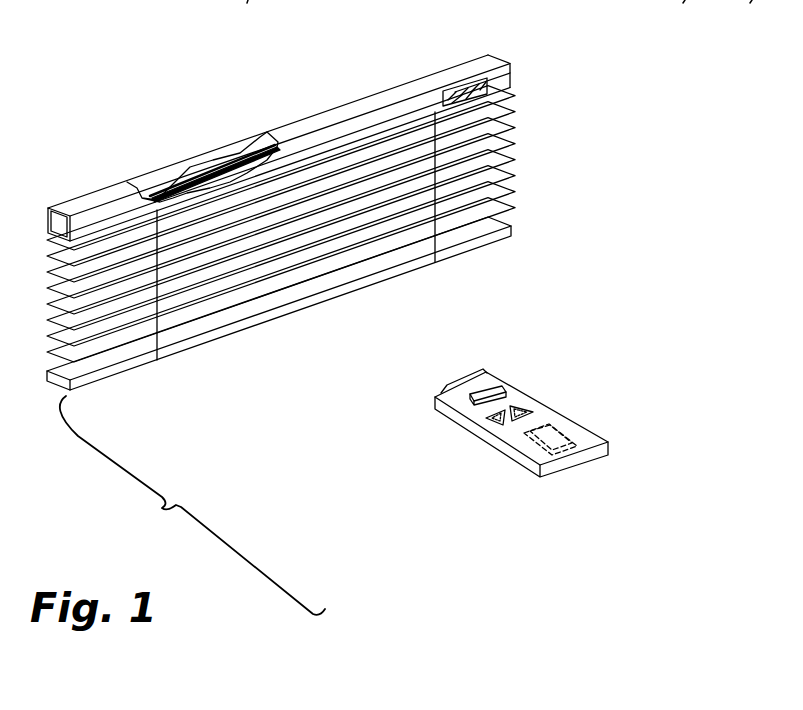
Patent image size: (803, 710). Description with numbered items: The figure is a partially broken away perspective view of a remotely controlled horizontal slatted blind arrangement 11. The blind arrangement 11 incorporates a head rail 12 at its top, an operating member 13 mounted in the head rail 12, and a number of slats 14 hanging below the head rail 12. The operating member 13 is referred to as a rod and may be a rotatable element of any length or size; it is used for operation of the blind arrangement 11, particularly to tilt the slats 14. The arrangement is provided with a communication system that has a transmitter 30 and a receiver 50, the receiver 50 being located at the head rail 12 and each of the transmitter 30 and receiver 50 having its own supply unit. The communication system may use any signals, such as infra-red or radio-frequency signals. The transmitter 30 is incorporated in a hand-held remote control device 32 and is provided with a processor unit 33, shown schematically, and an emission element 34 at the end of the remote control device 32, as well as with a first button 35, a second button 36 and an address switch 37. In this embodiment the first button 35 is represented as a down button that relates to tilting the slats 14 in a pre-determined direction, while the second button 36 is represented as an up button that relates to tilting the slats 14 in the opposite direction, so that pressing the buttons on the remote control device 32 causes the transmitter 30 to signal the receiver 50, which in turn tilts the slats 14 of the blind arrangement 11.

The horizontal slatted blind arrangement 11 is at (192, 505).
The head rail 12 is at (297, 126).
The operating member 13 is at (177, 178).
The slats 14 is at (514, 67).
The receiver 50 is at (470, 92).
The transmitter 30 is at (628, 396).
The remote control device 32 is at (525, 477).
The processor unit 33 is at (566, 450).
The emission element 34 is at (451, 388).
The first button 35 is at (490, 415).
The second button 36 is at (515, 405).
The address switch 37 is at (492, 393).